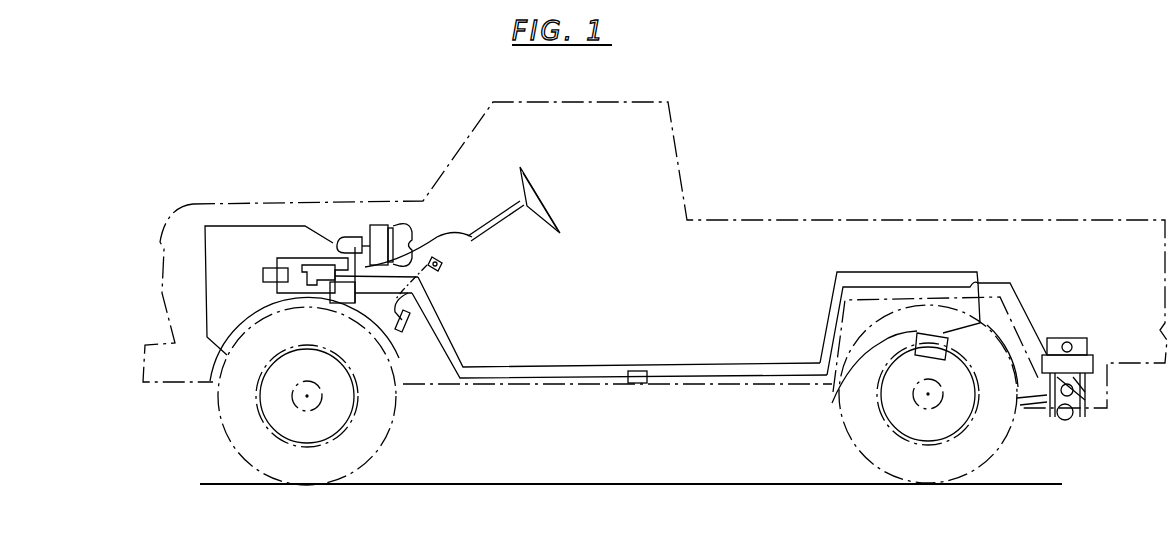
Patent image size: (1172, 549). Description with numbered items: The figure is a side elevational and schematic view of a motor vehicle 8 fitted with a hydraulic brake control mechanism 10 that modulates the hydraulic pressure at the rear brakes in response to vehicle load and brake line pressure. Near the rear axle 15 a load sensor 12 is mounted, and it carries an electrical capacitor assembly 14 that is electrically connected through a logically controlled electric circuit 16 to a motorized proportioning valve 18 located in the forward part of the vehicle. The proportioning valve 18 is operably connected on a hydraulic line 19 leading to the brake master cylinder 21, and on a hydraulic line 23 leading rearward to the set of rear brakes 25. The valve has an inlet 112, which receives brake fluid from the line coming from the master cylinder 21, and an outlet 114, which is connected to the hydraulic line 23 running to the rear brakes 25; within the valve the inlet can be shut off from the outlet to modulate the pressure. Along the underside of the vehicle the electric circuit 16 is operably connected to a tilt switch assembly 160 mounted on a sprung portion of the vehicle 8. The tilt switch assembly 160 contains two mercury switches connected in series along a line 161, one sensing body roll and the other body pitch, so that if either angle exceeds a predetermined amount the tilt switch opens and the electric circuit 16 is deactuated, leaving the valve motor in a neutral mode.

The motor vehicle 8 is at (432, 150).
The hydraulic brake control mechanism 10 is at (448, 273).
The load sensor 12 is at (1054, 428).
The electrical capacitor assembly 14 is at (1088, 350).
The rear axle 15 is at (936, 388).
The electric circuit 16 is at (263, 290).
The motorized proportioning valve 18 is at (312, 258).
The hydraulic line 19 is at (420, 238).
The brake master cylinder 21 is at (345, 240).
The hydraulic line 23 is at (450, 337).
The rear brakes 25 is at (915, 352).
The inlet 112 is at (263, 300).
The outlet 114 is at (414, 325).
The tilt switch assembly 160 is at (627, 383).
The line 161 is at (493, 380).